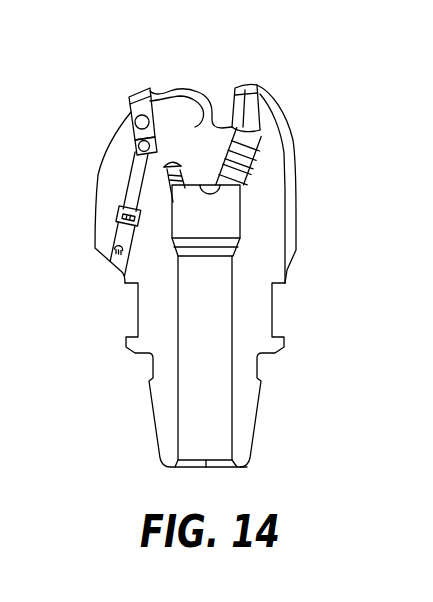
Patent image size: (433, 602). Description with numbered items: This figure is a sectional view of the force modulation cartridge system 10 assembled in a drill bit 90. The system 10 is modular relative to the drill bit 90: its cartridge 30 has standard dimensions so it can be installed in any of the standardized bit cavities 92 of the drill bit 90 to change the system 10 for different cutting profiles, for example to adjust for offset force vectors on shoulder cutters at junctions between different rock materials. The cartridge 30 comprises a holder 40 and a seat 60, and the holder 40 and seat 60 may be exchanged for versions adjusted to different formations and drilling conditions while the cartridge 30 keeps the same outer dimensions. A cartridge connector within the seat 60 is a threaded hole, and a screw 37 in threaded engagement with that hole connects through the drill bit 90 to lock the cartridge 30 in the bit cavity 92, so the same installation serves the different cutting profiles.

The force modulation cartridge system 10 is at (134, 100).
The cartridge 30 is at (129, 97).
The screw 37 is at (126, 194).
The holder 40 is at (128, 101).
The seat 60 is at (136, 144).
The drill bit 90 is at (213, 99).
The bit cavity 92 is at (178, 88).